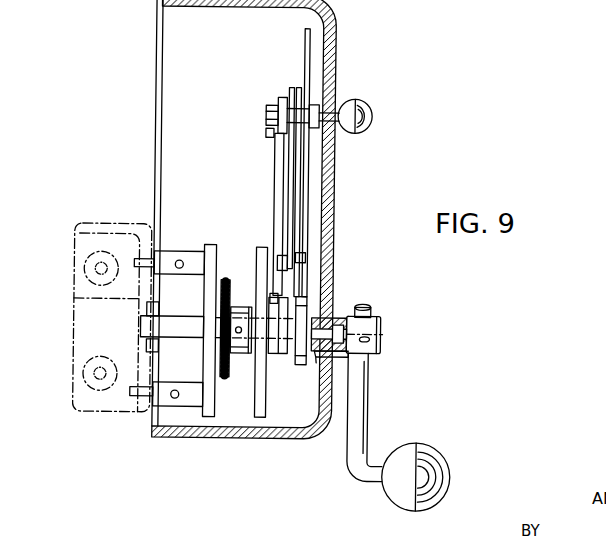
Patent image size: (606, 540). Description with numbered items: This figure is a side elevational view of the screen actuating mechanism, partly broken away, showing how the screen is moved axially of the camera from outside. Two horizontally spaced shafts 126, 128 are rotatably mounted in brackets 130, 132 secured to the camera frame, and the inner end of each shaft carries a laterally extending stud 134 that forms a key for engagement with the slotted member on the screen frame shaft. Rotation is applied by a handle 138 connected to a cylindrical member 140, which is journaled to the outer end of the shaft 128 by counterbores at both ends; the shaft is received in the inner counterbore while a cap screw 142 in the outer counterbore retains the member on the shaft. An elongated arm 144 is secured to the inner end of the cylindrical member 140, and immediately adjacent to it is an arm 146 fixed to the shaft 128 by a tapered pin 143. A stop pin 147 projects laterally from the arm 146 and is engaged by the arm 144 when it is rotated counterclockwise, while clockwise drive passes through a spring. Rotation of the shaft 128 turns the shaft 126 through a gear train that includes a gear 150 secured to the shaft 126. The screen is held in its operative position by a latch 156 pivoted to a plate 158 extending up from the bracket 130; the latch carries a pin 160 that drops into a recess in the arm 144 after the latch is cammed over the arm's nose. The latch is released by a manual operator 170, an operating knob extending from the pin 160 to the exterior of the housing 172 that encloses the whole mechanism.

The shaft 126 is at (190, 327).
The shaft 128 is at (333, 356).
The bracket 130 is at (263, 414).
The bracket 132 is at (210, 246).
The stud 134 is at (148, 348).
The handle 138 is at (372, 423).
The cylindrical member 140 is at (383, 321).
The cap screw 142 is at (345, 317).
The tapered pin 143 is at (273, 296).
The elongated arm 144 is at (308, 198).
The arm 146 is at (291, 218).
The stop pin 147 is at (306, 256).
The gear 150 is at (240, 373).
The latch 156 is at (280, 99).
The plate 158 is at (275, 180).
The pin 160 is at (326, 94).
The manual operator 170 is at (372, 101).
The housing 172 is at (336, 40).